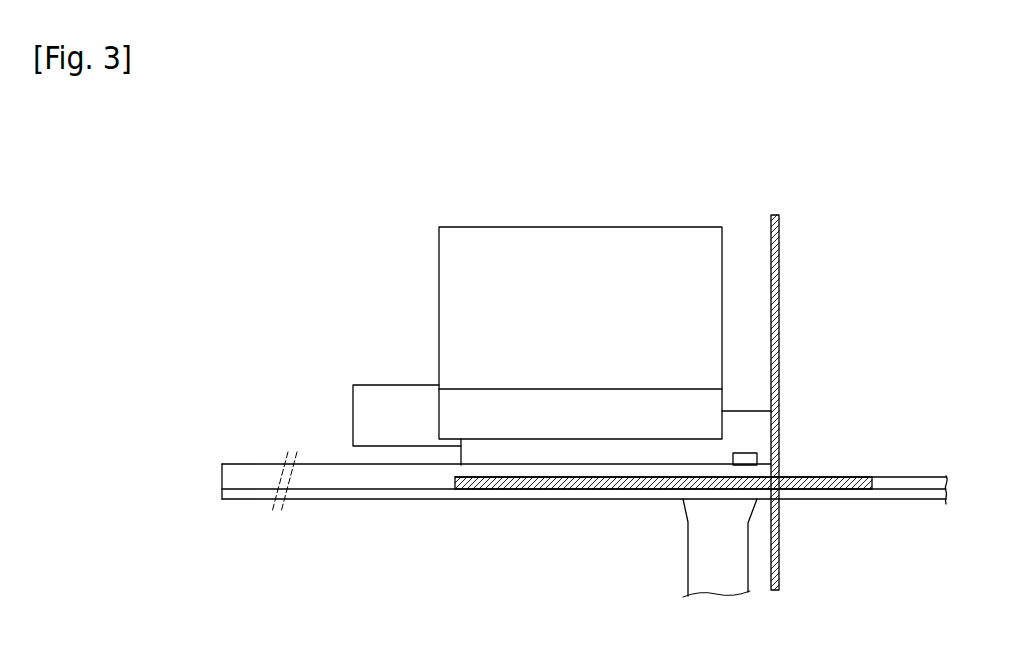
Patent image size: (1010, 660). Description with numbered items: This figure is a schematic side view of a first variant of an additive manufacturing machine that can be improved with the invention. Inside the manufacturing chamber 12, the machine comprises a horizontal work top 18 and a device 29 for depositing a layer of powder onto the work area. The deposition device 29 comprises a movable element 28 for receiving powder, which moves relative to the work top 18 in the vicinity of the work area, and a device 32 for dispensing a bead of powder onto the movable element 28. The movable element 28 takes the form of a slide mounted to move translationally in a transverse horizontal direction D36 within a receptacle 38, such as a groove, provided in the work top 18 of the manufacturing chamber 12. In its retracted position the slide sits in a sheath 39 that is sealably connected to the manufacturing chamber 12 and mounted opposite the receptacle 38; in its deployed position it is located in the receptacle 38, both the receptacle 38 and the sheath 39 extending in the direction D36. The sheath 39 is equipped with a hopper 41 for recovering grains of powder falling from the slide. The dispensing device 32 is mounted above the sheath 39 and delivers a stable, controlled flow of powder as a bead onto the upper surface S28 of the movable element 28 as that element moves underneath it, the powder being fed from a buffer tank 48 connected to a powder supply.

The manufacturing chamber 12 is at (779, 254).
The work top 18 is at (911, 465).
The movable element 28 is at (840, 466).
The upper surface of the movable element S28 is at (797, 477).
The deposition device 29 is at (513, 291).
The powder dispensing device 32 is at (520, 243).
The transverse horizontal direction D36 is at (333, 329).
The receptacle 38 is at (885, 493).
The sheath 39 is at (222, 481).
The hopper 41 is at (688, 561).
The buffer tank 48 is at (745, 466).